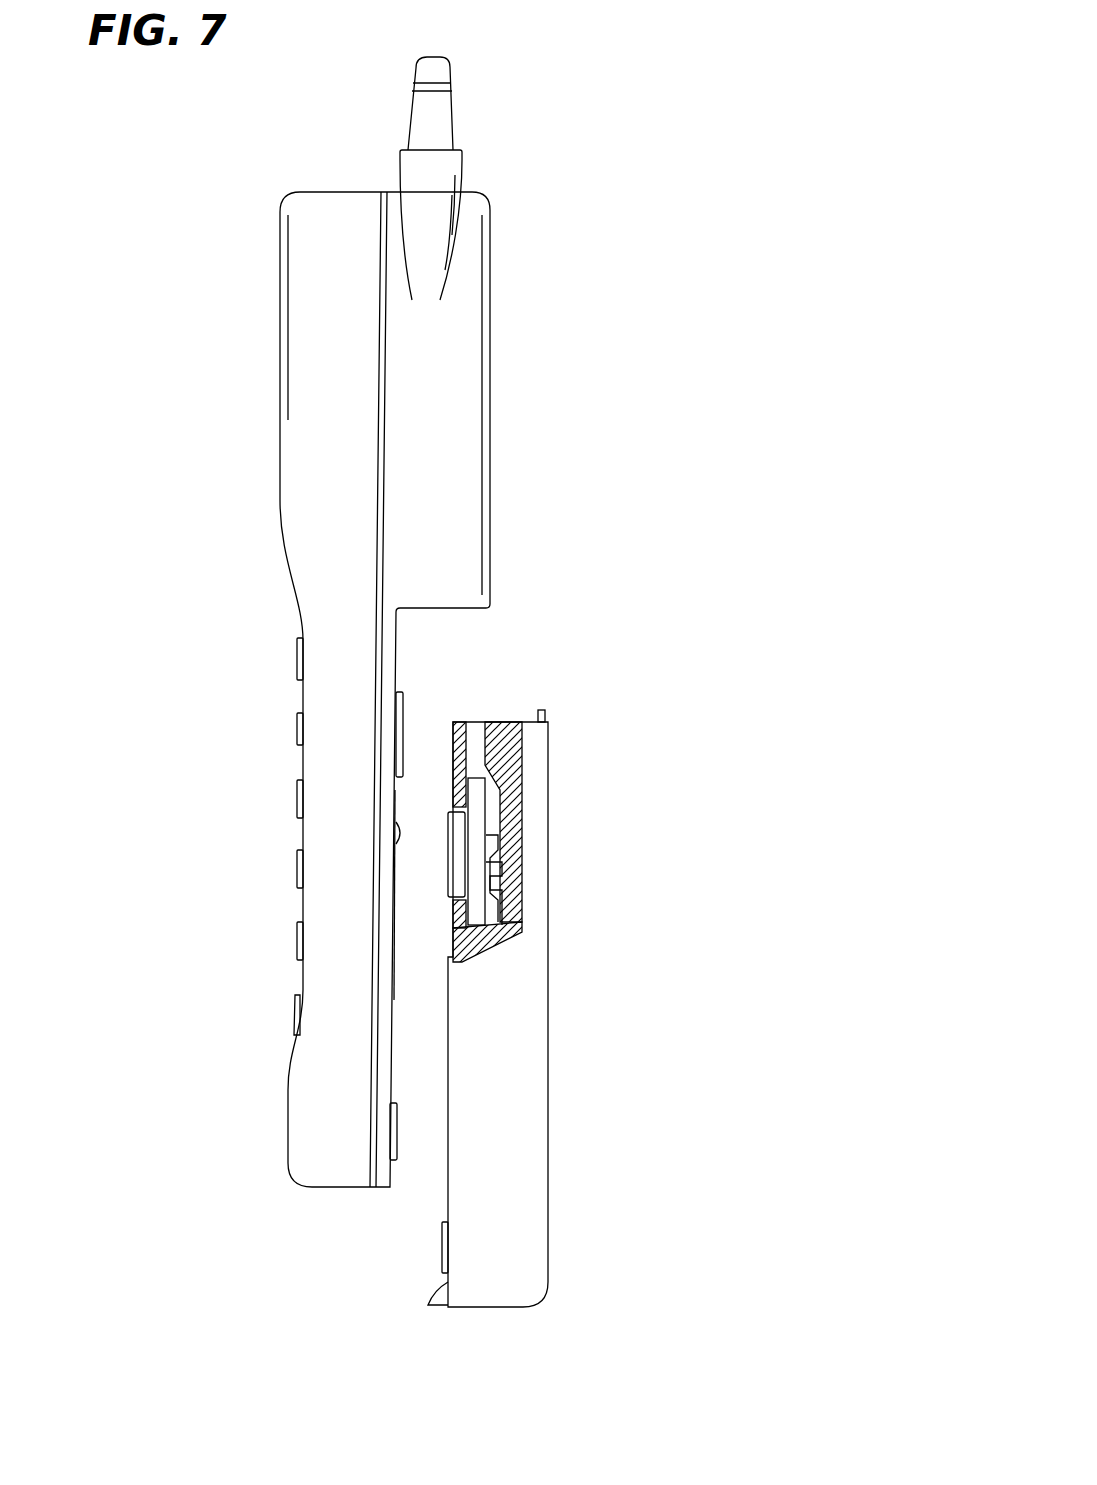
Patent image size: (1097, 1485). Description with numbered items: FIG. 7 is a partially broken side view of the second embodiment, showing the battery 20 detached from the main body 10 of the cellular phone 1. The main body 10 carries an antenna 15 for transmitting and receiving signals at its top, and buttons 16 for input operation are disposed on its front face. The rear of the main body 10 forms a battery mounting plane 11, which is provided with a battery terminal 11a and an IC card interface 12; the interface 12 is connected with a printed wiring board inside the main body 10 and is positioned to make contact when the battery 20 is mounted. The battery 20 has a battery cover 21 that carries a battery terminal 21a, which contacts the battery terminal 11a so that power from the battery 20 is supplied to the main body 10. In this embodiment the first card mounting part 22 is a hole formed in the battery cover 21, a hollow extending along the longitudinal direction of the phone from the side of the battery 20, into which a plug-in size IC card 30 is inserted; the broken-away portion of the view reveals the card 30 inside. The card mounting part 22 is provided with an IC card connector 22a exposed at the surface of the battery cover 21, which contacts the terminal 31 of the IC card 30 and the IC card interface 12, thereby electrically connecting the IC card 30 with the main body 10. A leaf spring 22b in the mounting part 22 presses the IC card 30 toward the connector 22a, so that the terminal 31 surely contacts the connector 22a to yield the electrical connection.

The cellular phone 1 is at (700, 515).
The main body 10 is at (497, 559).
The battery mounting plane 11 is at (398, 833).
The battery terminal 11a is at (393, 1138).
The IC card interface 12 is at (398, 732).
The antenna 15 is at (447, 126).
The buttons 16 is at (300, 943).
The battery 20 is at (485, 716).
The battery cover 21 is at (525, 1075).
The battery terminal 21a is at (452, 1245).
The first card mounting part 22 is at (480, 752).
The IC card connector 22a is at (462, 870).
The leaf spring 22b is at (502, 910).
The IC card 30 is at (477, 798).
The terminal 31 is at (455, 845).